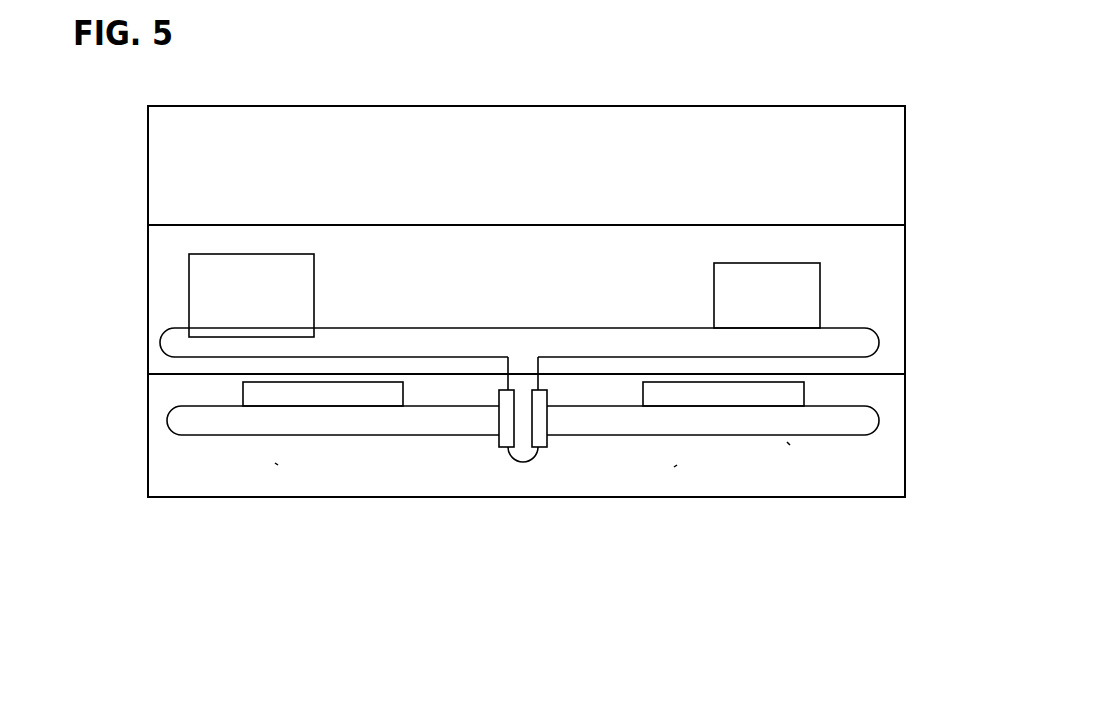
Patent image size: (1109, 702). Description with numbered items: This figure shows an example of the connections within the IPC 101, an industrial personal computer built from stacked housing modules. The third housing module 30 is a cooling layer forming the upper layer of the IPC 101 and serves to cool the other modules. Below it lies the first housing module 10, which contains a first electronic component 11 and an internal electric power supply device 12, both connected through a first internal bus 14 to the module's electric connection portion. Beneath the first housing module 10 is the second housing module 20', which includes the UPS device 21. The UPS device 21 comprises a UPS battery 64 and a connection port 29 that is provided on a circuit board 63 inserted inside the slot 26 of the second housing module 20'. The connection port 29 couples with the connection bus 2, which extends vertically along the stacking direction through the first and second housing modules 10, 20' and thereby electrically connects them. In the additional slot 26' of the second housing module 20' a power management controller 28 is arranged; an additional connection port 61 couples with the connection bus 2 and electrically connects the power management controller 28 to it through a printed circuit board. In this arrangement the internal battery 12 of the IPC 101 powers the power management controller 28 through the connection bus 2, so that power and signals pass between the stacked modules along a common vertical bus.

The IPC 101 is at (144, 562).
The third housing module 30 is at (905, 147).
The first housing module 10 is at (905, 277).
The second housing module 20' is at (564, 435).
The internal electric power supply device 12 is at (314, 292).
The first electronic component 11 is at (714, 300).
The first internal bus 14 is at (862, 340).
The circuit board 63 is at (882, 424).
The UPS device 21 is at (790, 445).
The slot 26 is at (646, 521).
The additional slot 26' is at (319, 529).
The power management controller 28 is at (243, 395).
The UPS battery 64 is at (731, 397).
The additional connection port 61 is at (498, 443).
The connection port 29 is at (547, 440).
The connection bus 2 is at (523, 452).